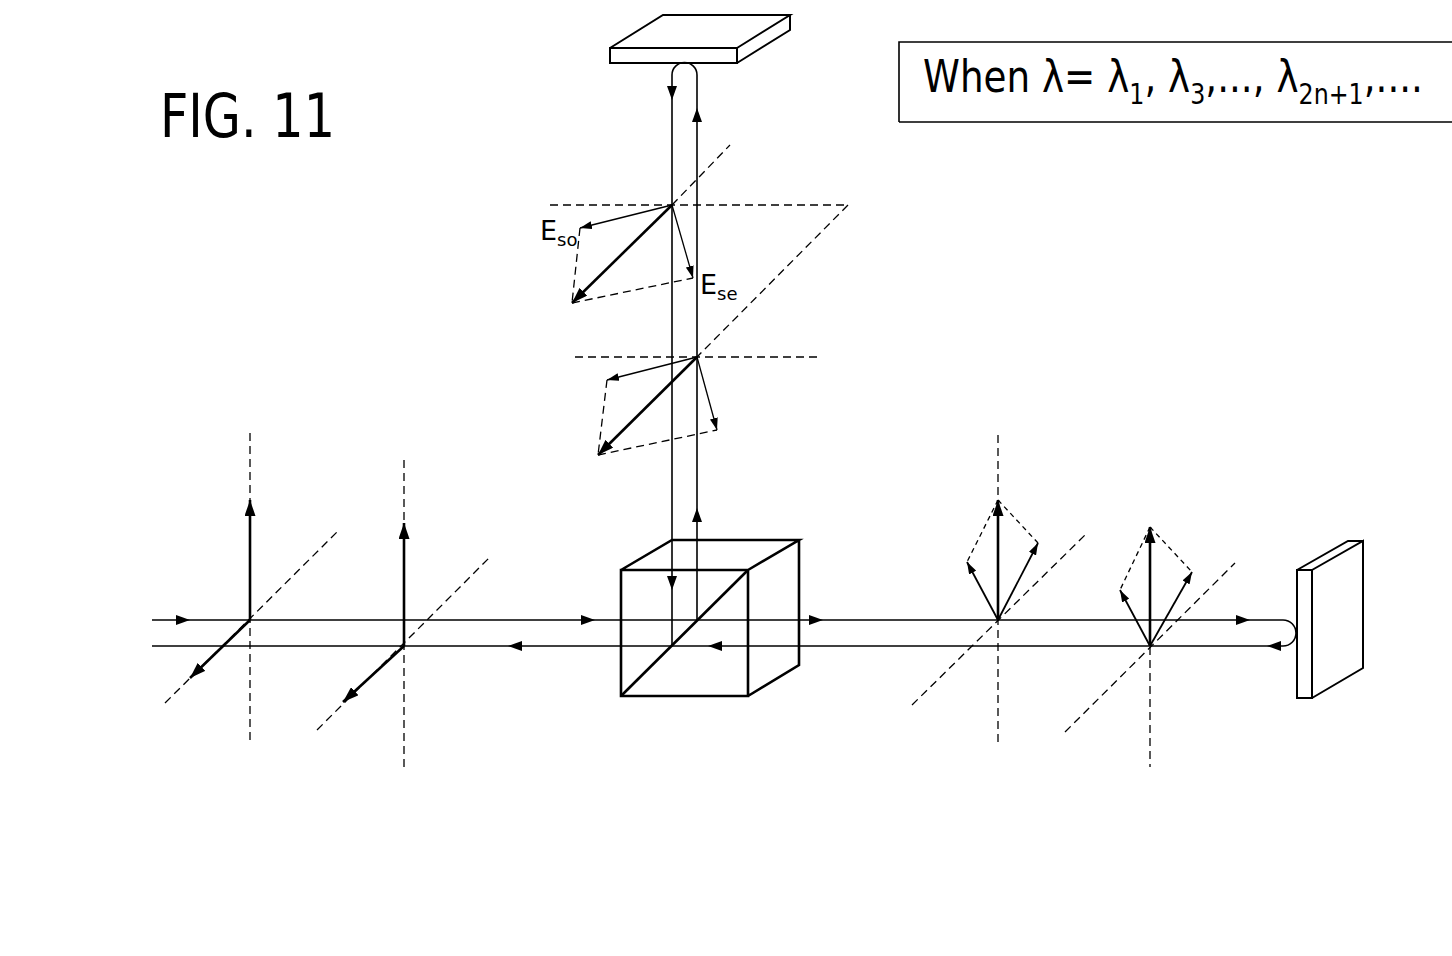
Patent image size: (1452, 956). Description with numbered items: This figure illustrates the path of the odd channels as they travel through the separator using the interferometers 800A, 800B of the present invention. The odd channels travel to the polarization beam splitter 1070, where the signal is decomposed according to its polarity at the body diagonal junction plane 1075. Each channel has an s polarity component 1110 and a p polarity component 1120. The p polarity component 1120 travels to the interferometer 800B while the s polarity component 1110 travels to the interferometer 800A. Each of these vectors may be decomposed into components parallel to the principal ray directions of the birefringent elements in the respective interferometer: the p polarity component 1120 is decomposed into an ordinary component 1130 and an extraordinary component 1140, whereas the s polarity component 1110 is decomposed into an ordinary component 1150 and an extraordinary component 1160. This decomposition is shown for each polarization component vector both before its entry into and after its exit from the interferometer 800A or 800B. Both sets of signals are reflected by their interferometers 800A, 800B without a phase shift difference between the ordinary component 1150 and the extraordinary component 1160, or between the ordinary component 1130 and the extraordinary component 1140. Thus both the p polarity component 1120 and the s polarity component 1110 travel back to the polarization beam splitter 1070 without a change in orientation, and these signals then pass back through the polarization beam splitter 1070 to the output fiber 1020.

The interferometer 800A is at (618, 45).
The interferometer 800B is at (1333, 547).
The output optical fiber 1020 is at (488, 677).
The polarization beam splitter 1070 is at (655, 697).
The body diagonal junction plane 1075 is at (633, 686).
The s polarity component Es 1110 is at (606, 272).
The p polarity component Ep 1120 is at (252, 538).
The component Epo 1130 is at (1019, 587).
The component Epe 1140 is at (985, 588).
The component Eso 1150 is at (624, 375).
The component Ese 1160 is at (707, 390).